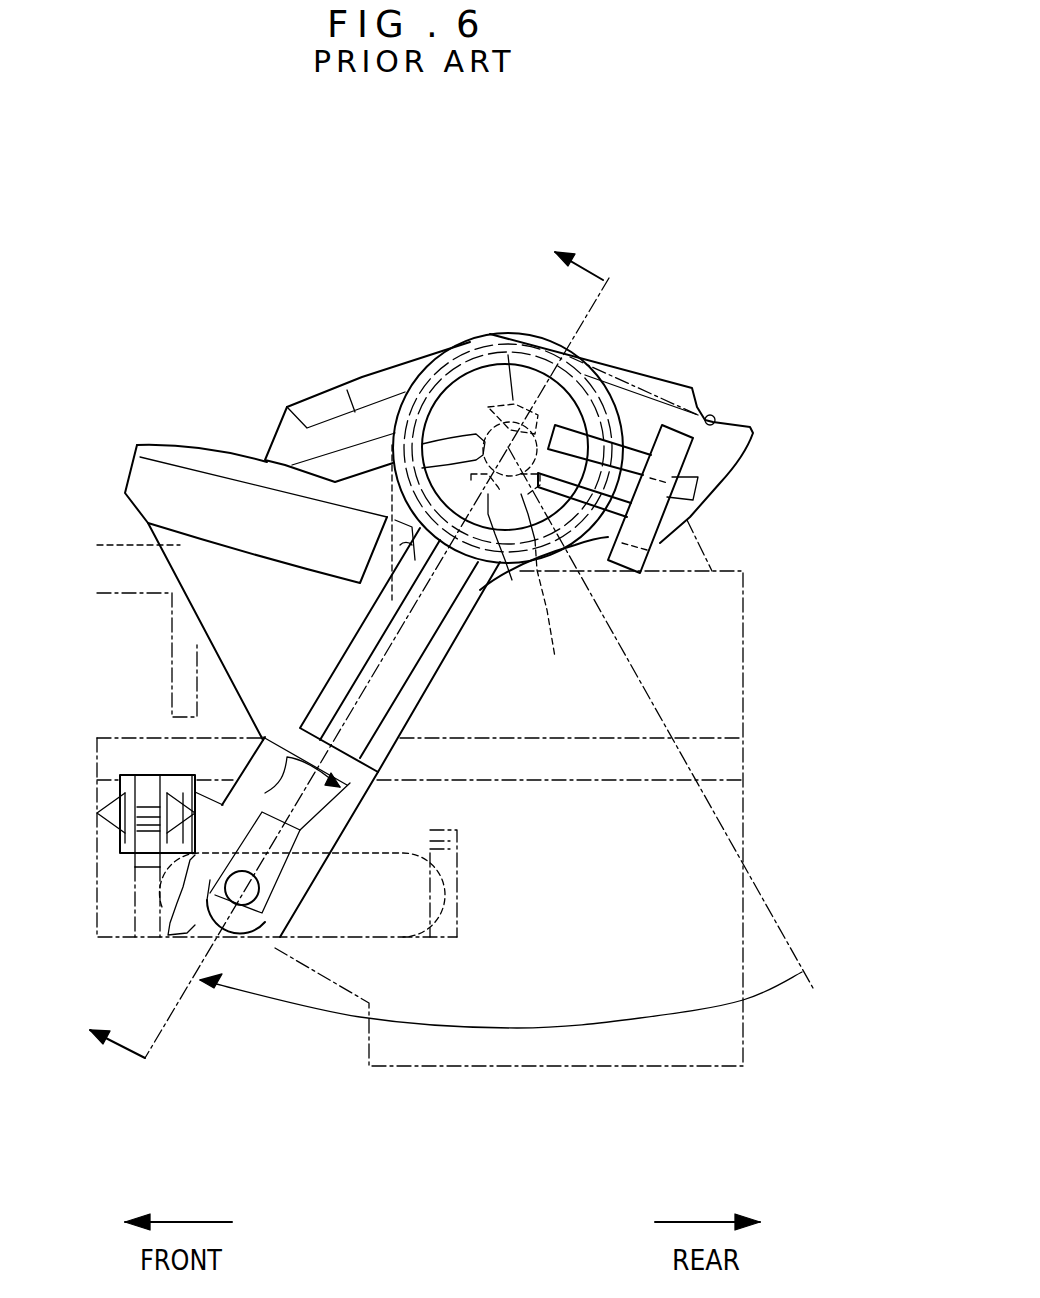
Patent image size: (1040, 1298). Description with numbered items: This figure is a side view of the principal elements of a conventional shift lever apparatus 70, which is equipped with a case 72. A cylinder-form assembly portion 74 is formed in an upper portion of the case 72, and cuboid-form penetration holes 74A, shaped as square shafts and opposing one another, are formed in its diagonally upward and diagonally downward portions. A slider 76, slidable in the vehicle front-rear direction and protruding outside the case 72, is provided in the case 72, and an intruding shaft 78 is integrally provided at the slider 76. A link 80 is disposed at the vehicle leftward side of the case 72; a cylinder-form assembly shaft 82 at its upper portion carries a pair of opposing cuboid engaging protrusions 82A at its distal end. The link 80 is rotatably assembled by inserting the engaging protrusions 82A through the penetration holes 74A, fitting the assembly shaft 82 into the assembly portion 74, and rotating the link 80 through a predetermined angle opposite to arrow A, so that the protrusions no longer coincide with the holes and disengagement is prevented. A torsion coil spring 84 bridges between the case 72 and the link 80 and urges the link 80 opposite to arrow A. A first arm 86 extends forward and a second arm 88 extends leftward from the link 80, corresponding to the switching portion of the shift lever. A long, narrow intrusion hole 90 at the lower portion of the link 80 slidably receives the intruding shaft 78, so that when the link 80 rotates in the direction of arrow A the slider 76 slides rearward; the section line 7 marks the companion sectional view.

The shift lever apparatus 70 is at (252, 288).
The case 72 is at (752, 690).
The assembly portion 74 is at (395, 385).
The penetration holes 74A is at (478, 404).
The slider 76 is at (274, 933).
The intruding shaft 78 is at (237, 935).
The link 80 is at (418, 708).
The assembly shaft 82 is at (493, 404).
The engaging protrusions 82A is at (496, 412).
The torsion coil spring 84 is at (628, 383).
The first arm 86 is at (218, 450).
The second arm 88 is at (647, 523).
The intrusion hole 90 is at (207, 920).
The section line 7- 7 is at (330, 642).